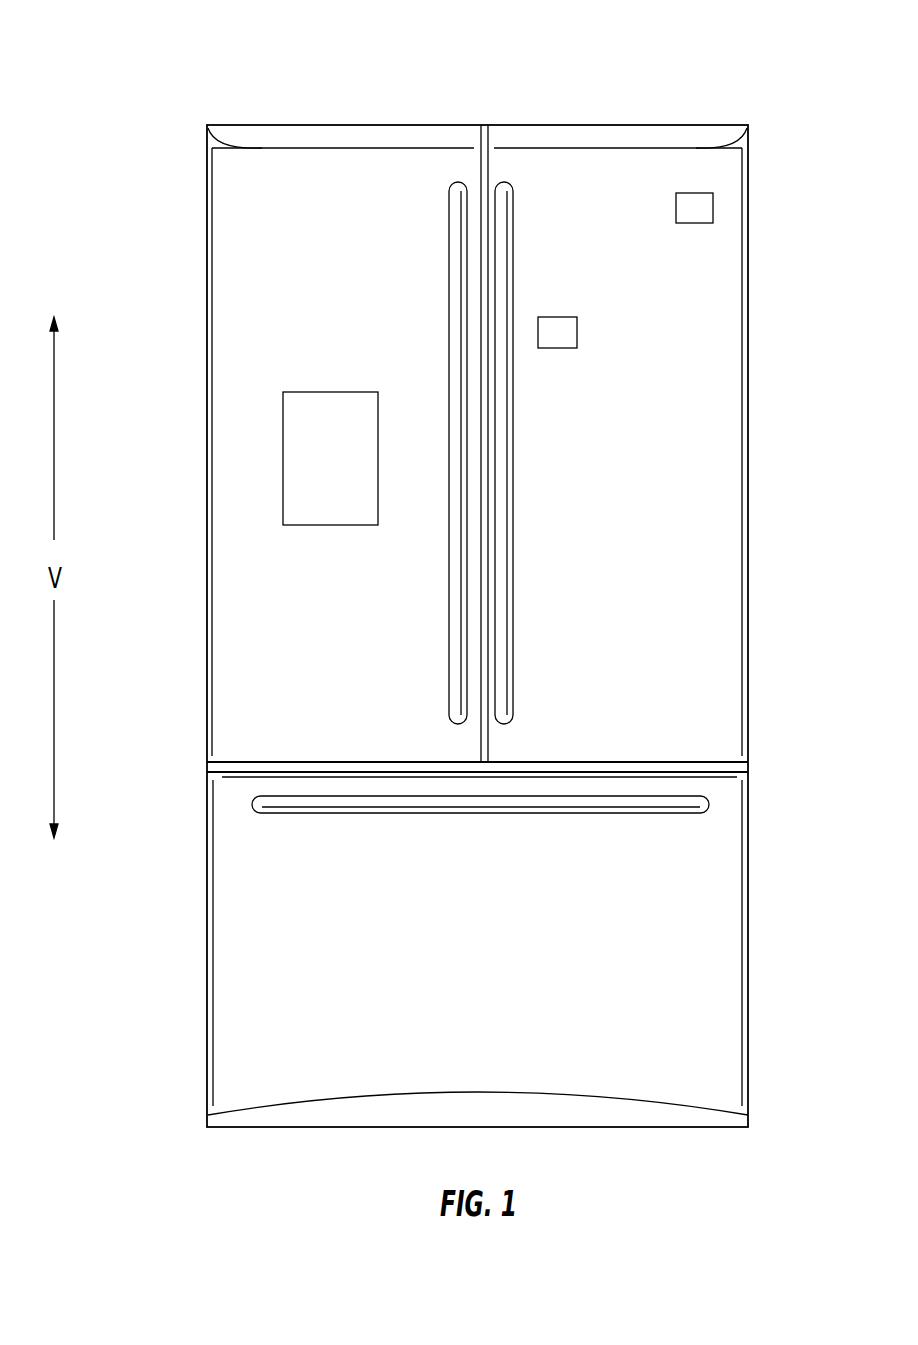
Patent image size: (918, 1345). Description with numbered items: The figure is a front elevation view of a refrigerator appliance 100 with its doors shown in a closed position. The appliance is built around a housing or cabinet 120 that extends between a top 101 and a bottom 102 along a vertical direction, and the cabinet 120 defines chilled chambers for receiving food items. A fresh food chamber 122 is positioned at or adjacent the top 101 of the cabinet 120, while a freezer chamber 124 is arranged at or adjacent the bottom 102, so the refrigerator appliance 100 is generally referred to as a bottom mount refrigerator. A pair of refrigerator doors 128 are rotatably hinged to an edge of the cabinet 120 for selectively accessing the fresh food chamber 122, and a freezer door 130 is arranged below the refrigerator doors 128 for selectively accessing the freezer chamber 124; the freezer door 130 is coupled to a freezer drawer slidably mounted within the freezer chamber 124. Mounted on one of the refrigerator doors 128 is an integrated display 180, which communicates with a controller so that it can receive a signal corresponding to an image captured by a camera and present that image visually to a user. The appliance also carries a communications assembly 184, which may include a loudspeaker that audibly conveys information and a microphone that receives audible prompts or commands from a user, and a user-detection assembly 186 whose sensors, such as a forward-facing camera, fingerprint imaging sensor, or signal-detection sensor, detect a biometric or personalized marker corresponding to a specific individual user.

The refrigerator appliance 100 is at (760, 68).
The top 101 is at (192, 115).
The bottom 102 is at (198, 1116).
The cabinet 120 is at (748, 765).
The fresh food chamber 122 is at (704, 551).
The freezer chamber 124 is at (682, 993).
The refrigerator doors 128 is at (322, 178).
The freezer door 130 is at (238, 973).
The integrated display 180 is at (283, 450).
The communications assembly 184 is at (692, 214).
The user-detection assembly 186 is at (556, 340).